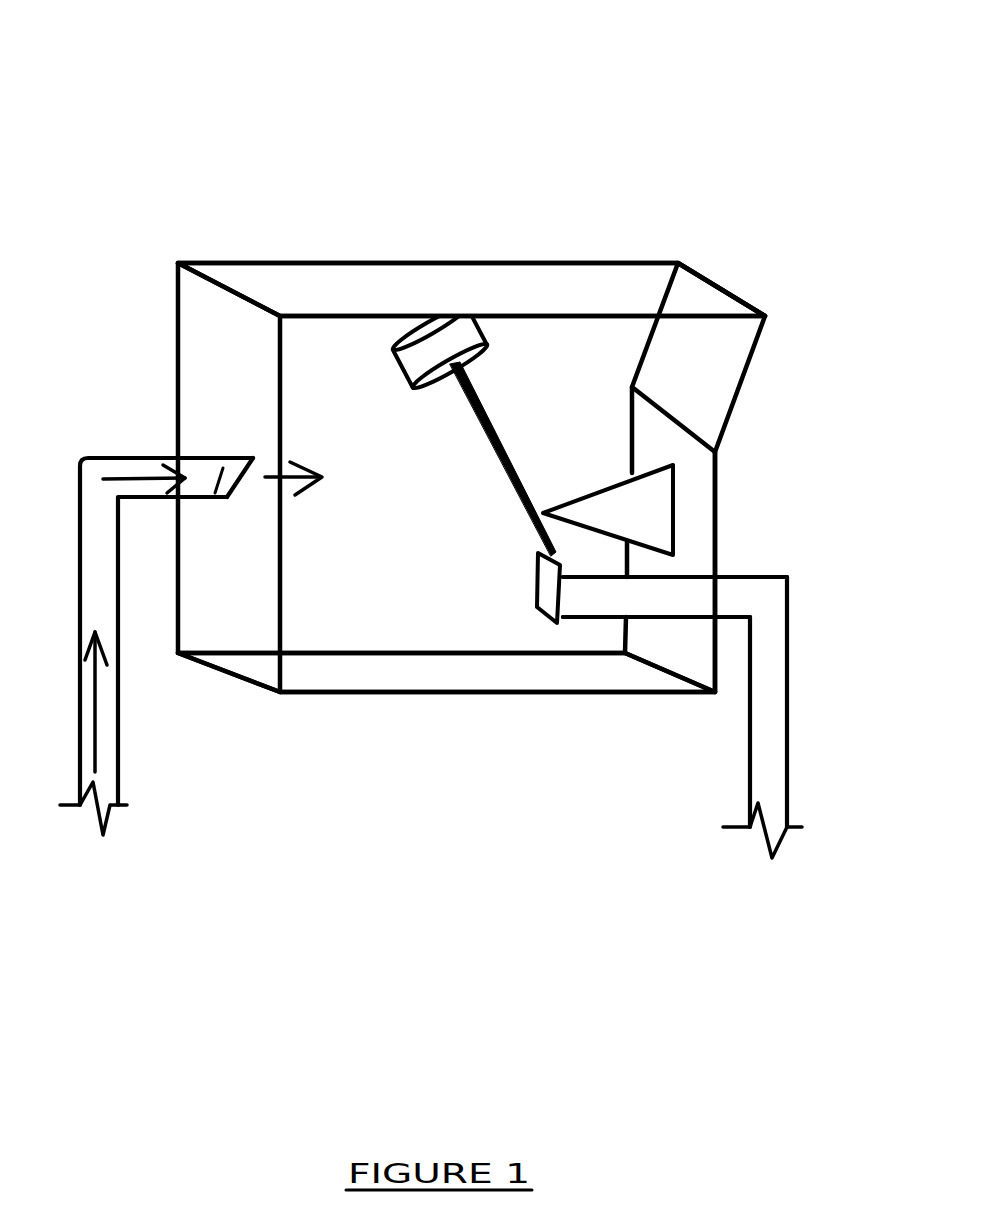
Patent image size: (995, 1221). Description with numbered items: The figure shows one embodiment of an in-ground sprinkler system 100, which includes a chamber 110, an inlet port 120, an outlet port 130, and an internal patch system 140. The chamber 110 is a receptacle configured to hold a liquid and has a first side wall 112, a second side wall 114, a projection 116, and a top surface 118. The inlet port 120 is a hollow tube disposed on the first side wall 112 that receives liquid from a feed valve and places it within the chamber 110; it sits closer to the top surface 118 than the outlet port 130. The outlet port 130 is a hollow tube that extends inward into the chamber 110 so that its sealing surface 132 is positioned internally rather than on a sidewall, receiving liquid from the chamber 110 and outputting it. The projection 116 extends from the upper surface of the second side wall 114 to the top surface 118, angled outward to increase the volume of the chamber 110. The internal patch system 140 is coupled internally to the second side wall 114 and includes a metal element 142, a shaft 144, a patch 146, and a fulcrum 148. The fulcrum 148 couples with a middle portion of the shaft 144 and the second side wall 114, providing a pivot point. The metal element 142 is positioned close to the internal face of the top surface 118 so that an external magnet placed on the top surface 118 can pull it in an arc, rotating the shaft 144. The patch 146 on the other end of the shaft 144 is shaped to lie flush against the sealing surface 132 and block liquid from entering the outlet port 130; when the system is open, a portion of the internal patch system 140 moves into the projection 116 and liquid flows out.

The in-ground sprinkler system 100 is at (160, 68).
The chamber 110 is at (571, 378).
The first side wall 112 is at (223, 605).
The second side wall 114 is at (713, 470).
The projection 116 is at (732, 358).
The top surface 118 is at (277, 262).
The inlet port 120 is at (147, 457).
The outlet port 130 is at (767, 642).
The sealing surface 132 is at (562, 620).
The internal patch system 140 is at (452, 487).
The metal element 142 is at (430, 340).
The shaft 144 is at (477, 423).
The patch 146 is at (538, 585).
The fulcrum 148 is at (617, 518).